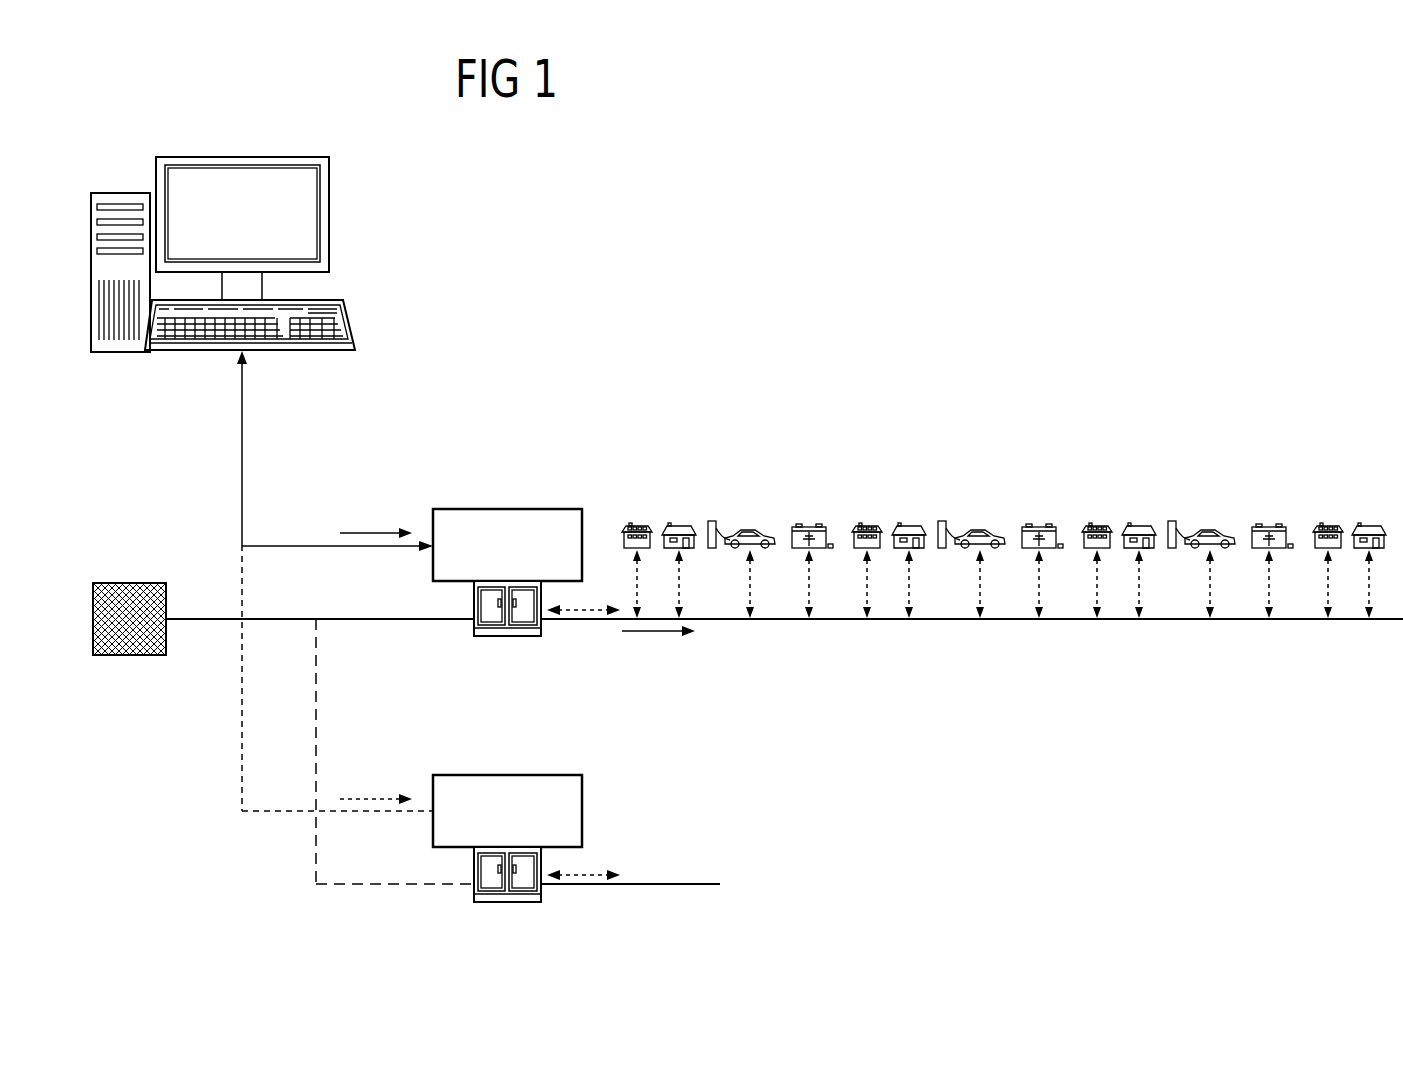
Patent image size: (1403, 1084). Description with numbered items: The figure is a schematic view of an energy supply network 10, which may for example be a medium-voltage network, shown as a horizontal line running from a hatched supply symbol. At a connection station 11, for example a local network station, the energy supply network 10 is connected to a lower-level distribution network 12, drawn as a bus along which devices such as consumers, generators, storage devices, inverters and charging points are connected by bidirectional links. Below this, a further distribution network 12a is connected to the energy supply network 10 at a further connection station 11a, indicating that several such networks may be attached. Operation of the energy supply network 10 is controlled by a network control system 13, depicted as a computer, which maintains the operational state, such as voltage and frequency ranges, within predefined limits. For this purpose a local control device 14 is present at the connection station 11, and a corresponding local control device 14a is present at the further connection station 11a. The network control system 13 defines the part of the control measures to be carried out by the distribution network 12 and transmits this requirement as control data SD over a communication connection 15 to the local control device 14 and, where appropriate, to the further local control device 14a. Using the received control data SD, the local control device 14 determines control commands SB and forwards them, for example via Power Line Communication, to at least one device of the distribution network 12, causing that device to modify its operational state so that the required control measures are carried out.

The energy supply network 10 is at (207, 620).
The connection station 11 is at (490, 636).
The further connection station 11a is at (488, 903).
The distribution network 12 is at (777, 620).
The further distribution network 12a is at (680, 885).
The network control system 13 is at (329, 215).
The local control device 14 is at (548, 509).
The further local control device 14a is at (548, 775).
The communication connection 15 is at (242, 447).